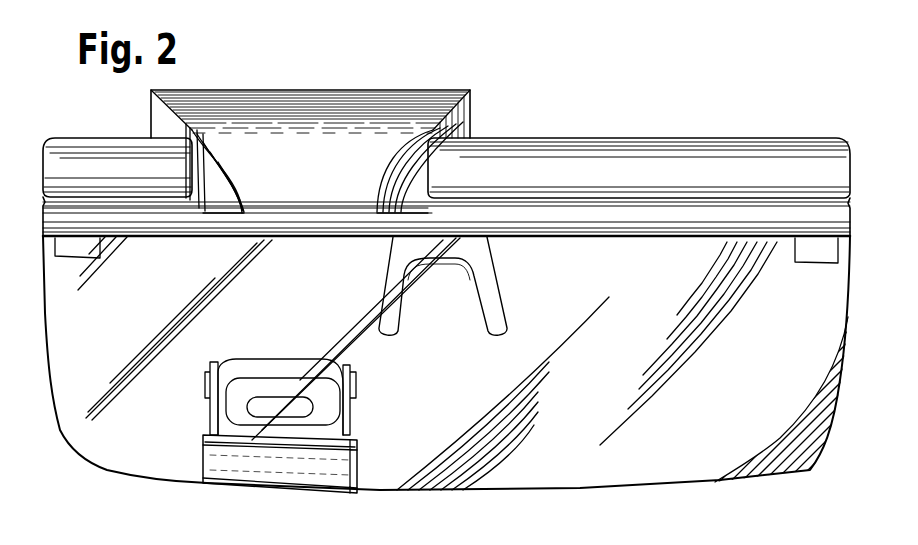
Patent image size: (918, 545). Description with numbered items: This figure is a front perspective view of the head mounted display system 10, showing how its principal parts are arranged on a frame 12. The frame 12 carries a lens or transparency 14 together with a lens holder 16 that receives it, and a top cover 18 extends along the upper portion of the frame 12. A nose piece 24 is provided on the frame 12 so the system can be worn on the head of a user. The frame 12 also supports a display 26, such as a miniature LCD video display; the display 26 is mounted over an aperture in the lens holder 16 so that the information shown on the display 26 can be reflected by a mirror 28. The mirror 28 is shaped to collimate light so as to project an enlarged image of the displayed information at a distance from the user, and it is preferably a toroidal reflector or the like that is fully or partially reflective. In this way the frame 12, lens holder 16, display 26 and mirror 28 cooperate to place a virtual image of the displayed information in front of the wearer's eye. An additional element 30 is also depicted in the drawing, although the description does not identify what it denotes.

The head mounted display system 10 is at (573, 500).
The frame 12 is at (446, 193).
The lens or transparency 14 is at (807, 452).
The lens holder 16 is at (300, 226).
The top cover 18 is at (530, 160).
The nose piece 24 is at (500, 280).
The display 26 is at (318, 256).
The mirror 28 is at (295, 360).
The base plate 30 is at (258, 473).